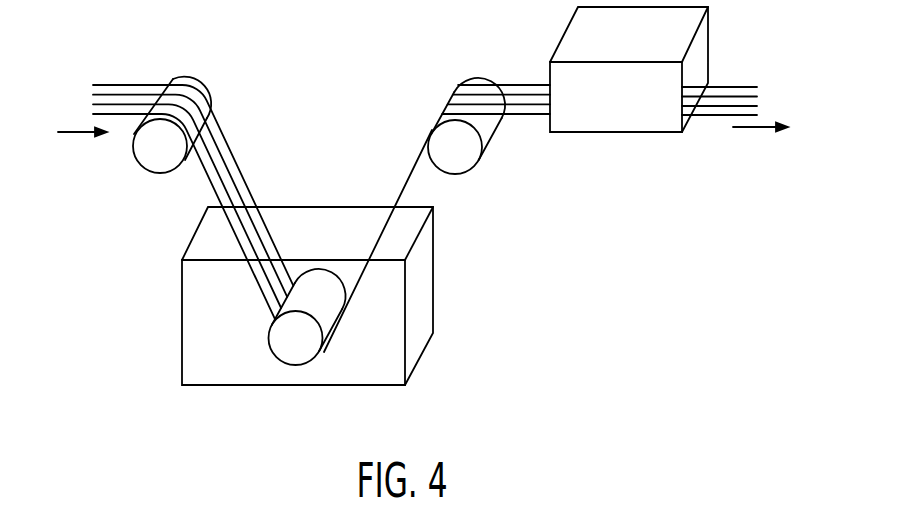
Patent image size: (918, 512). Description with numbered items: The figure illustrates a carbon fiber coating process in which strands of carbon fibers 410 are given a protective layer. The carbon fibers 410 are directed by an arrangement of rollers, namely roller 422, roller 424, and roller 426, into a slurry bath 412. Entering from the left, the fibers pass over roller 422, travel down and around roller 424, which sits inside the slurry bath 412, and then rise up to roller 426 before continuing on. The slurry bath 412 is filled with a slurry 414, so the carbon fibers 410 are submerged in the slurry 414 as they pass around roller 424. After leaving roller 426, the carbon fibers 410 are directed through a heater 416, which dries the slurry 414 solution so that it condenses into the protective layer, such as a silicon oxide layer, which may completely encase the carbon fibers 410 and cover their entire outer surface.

The carbon fibers 410 is at (237, 162).
The slurry bath 412 is at (198, 312).
The slurry 414 is at (327, 243).
The heater 416 is at (615, 49).
The roller 422 is at (160, 152).
The roller 424 is at (295, 338).
The roller 426 is at (455, 145).